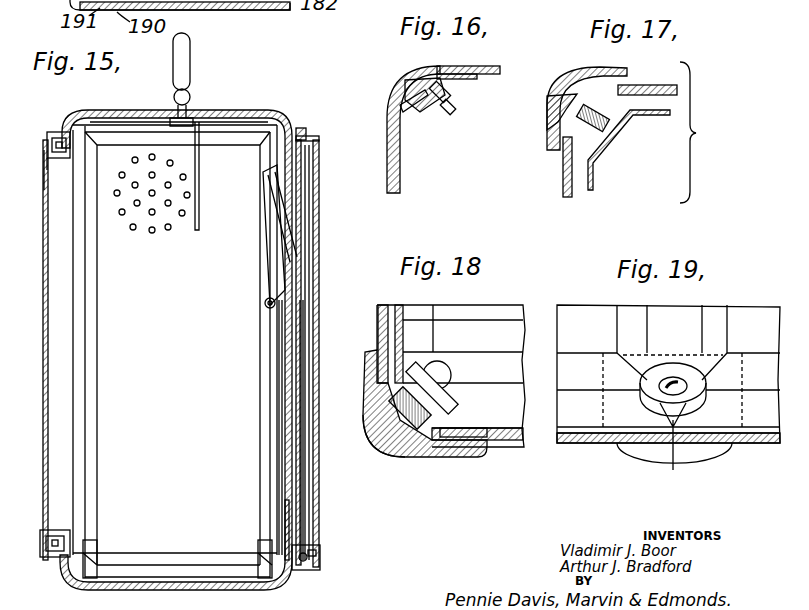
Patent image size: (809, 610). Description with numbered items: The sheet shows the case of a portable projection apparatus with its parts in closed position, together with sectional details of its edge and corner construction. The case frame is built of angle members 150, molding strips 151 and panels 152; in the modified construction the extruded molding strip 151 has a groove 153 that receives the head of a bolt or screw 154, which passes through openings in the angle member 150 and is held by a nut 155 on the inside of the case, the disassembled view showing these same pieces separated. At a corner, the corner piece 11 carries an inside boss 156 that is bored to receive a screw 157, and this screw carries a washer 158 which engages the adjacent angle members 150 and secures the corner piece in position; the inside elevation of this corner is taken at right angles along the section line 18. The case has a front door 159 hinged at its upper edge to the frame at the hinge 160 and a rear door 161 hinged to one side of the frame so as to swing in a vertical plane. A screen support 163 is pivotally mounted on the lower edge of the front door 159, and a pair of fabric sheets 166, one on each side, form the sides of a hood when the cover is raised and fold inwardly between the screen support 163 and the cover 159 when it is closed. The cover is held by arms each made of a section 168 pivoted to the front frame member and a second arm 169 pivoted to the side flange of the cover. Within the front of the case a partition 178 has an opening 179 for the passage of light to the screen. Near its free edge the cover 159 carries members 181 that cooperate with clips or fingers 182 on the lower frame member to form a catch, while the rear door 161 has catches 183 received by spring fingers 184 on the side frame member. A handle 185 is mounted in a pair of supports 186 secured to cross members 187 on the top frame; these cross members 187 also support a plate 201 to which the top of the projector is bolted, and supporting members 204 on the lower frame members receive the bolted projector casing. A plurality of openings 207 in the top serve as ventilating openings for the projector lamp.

In FIG. 18, the corner piece 11 is at (420, 453).
In FIG. 19, the corner piece 11 is at (695, 452).
In FIG. 19, the section line 18 is at (673, 300).
In FIG. 16, the angle member 150 is at (410, 113).
In FIG. 17, the angle member 150 is at (600, 153).
In FIG. 18, the angle member 150 is at (403, 325).
In FIG. 19, the angle member 150 is at (683, 317).
In FIG. 16, the molding strip 151 is at (390, 107).
In FIG. 17, the molding strip 151 is at (563, 83).
In FIG. 18, the molding strip 151 is at (378, 318).
In FIG. 16, the panel 152 is at (502, 60).
In FIG. 17, the panel 152 is at (662, 85).
In FIG. 16, the groove 153 is at (413, 88).
In FIG. 17, the groove 153 is at (558, 100).
In FIG. 18, the groove 153 is at (393, 337).
In FIG. 16, the bolt or screw 154 is at (433, 112).
In FIG. 17, the bolt or screw 154 is at (625, 115).
In FIG. 16, the nut 155 is at (438, 90).
In FIG. 18, the boss 156 is at (390, 403).
In FIG. 18, the screw 157 is at (440, 363).
In FIG. 19, the screw 157 is at (672, 377).
In FIG. 18, the washer 158 is at (453, 400).
In FIG. 19, the washer 158 is at (647, 377).
In FIG. 15, the front door 159 is at (320, 220).
In FIG. 15, the hinge 160 is at (300, 133).
In FIG. 15, the rear door 161 is at (46, 318).
In FIG. 15, the screen support 163 is at (300, 507).
In FIG. 15, the fabric sheet 166 is at (310, 452).
In FIG. 15, the arm section 168 is at (273, 267).
In FIG. 15, the second arm 169 is at (270, 217).
In FIG. 15, the partition 178 is at (285, 415).
In FIG. 15, the opening 179 is at (287, 353).
In FIG. 15, the catch member 181 is at (318, 553).
In FIG. 15, the clip or finger 182 is at (283, 525).
In FIG. 15, the catch 183 is at (60, 157).
In FIG. 15, the spring finger 184 is at (50, 180).
In FIG. 15, the handle 185 is at (190, 72).
In FIG. 15, the handle support 186 is at (185, 107).
In FIG. 15, the cross member 187 is at (250, 117).
In FIG. 15, the plate 201 is at (200, 160).
In FIG. 15, the supporting member 204 is at (97, 537).
In FIG. 15, the ventilating opening 207 is at (151, 235).